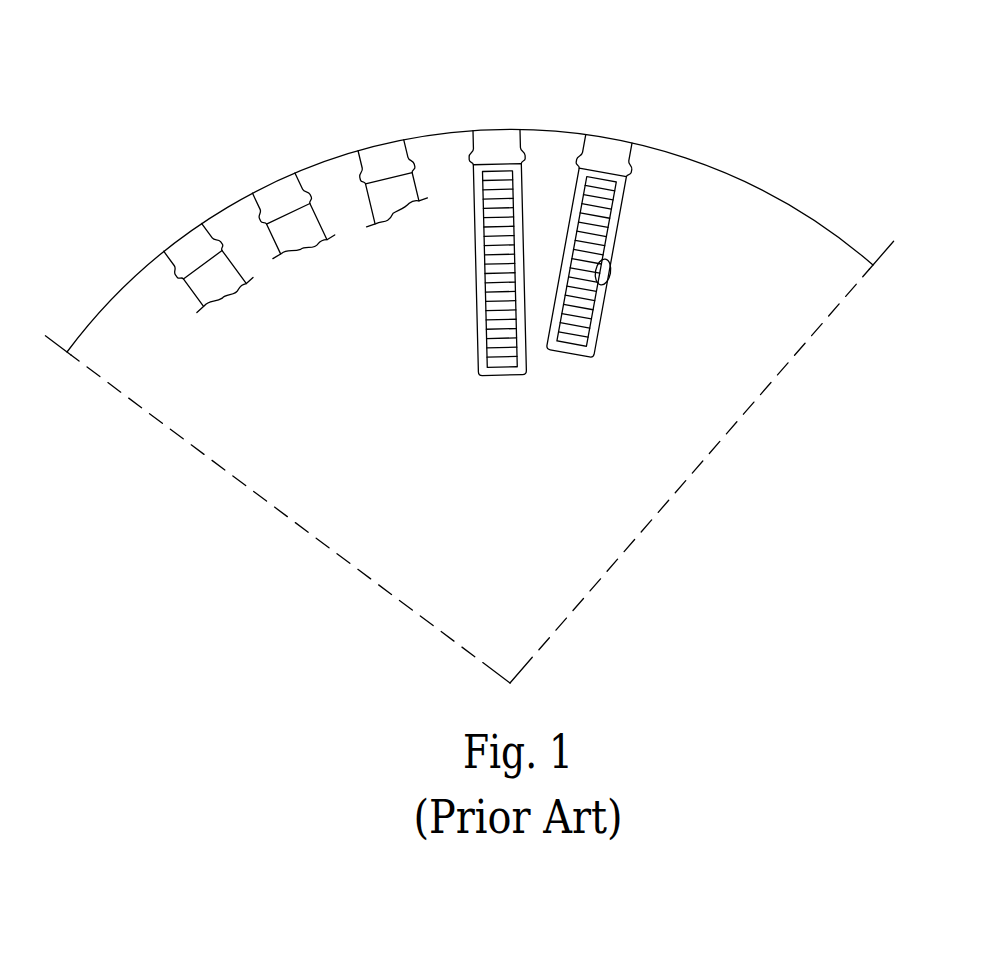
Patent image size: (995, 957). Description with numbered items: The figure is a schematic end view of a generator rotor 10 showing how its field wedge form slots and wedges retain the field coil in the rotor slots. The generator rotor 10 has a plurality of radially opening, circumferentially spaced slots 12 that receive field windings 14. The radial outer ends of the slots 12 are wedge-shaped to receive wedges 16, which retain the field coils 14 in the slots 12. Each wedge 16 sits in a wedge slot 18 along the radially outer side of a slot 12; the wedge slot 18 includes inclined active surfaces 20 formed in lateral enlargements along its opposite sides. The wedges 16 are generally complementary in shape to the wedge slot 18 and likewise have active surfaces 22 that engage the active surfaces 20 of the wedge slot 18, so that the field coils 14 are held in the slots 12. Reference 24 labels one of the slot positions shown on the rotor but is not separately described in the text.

The generator rotor 10 is at (762, 187).
The slots 12 is at (612, 257).
The field windings 14 is at (614, 182).
The wedges 16 is at (497, 143).
The wedge slots 18 is at (373, 147).
The inclined active surfaces 20 is at (275, 187).
The active surfaces 22 is at (631, 160).
The slot 24 is at (178, 282).